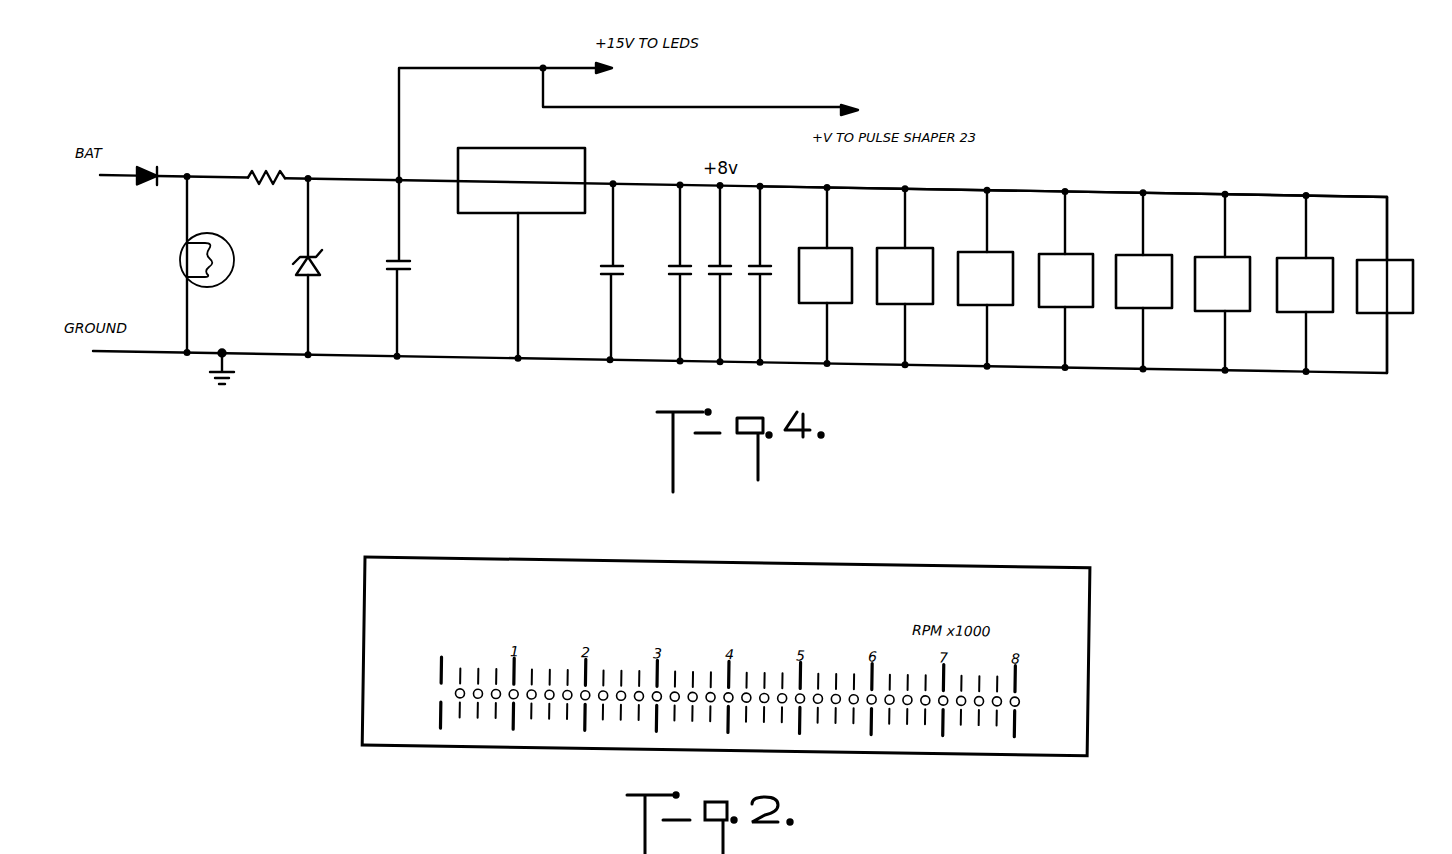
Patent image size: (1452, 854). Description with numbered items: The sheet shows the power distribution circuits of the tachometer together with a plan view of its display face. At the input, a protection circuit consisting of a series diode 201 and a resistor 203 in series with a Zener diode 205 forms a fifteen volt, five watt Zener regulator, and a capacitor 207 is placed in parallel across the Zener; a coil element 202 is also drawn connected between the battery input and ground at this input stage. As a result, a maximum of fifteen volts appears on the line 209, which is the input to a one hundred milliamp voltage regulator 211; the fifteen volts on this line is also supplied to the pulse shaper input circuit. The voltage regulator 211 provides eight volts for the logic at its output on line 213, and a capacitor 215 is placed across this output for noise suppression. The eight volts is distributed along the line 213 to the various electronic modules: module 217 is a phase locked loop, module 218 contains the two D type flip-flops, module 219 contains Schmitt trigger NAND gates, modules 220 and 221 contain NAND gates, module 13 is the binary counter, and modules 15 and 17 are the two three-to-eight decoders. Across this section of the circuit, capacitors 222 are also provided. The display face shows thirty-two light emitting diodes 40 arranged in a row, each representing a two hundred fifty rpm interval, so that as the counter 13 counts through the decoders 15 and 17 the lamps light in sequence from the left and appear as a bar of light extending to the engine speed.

In FIG. 4, the series diode 201 is at (146, 161).
In FIG. 4, the ignition coil 202 is at (219, 238).
In FIG. 4, the resistor 203 is at (281, 170).
In FIG. 4, the Zener diode 205 is at (297, 279).
In FIG. 4, the capacitor 207 is at (405, 270).
In FIG. 4, the line 209 is at (448, 56).
In FIG. 4, the voltage regulator 211 is at (540, 152).
In FIG. 4, the line 213 is at (1095, 190).
In FIG. 4, the capacitor 215 is at (600, 268).
In FIG. 4, the phase locked loop 217 is at (812, 246).
In FIG. 4, the module containing the two D type flip-flops 218 is at (889, 248).
In FIG. 4, the module containing Schmitt trigger NAND gates 219 is at (962, 252).
In FIG. 4, the module containing NAND gates 220 is at (1046, 254).
In FIG. 4, the module containing NAND gates 221 is at (1121, 255).
In FIG. 4, the capacitors 222 is at (757, 280).
In FIG. 4, the binary counter 13 is at (1237, 312).
In FIG. 4, the decoder 15 is at (1318, 313).
In FIG. 4, the decoder 17 is at (1400, 315).
In FIG. 2, the light emitting diodes 40 is at (464, 686).